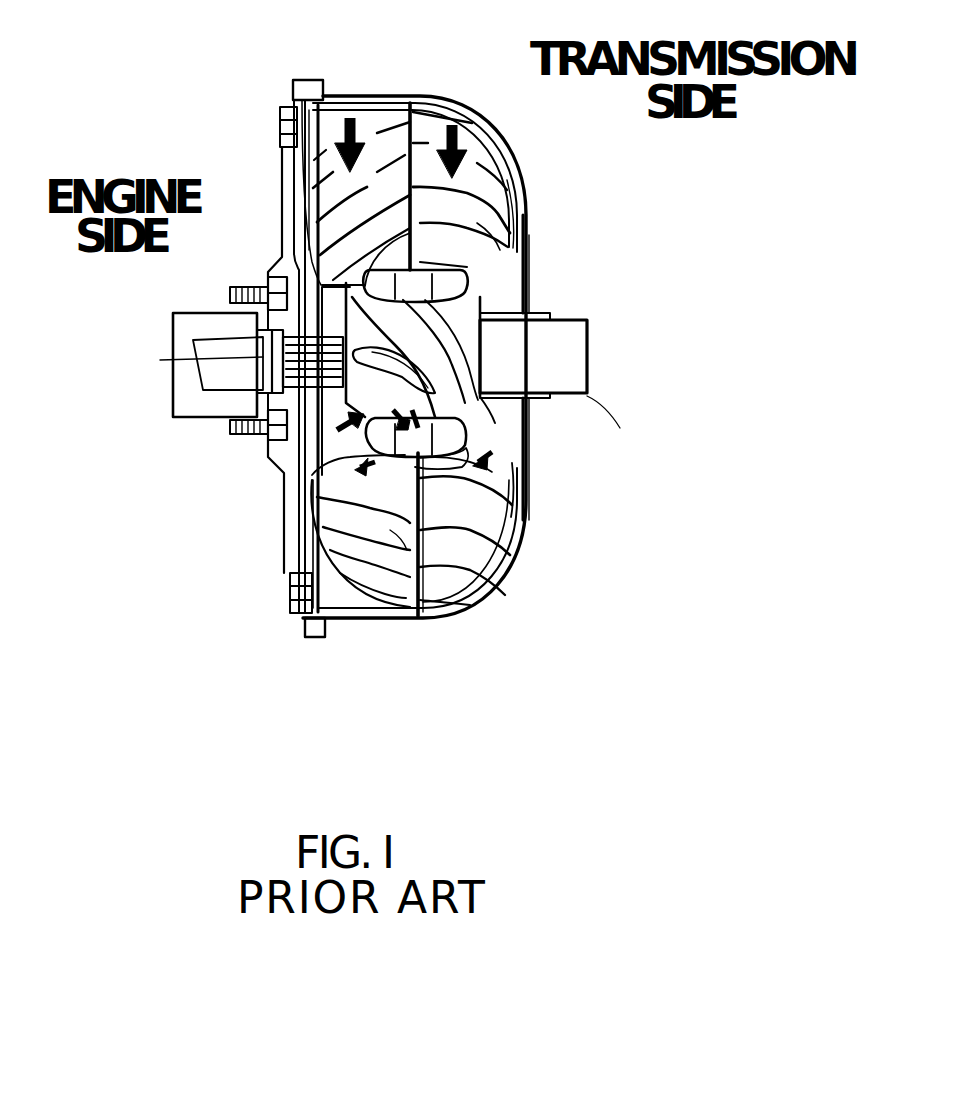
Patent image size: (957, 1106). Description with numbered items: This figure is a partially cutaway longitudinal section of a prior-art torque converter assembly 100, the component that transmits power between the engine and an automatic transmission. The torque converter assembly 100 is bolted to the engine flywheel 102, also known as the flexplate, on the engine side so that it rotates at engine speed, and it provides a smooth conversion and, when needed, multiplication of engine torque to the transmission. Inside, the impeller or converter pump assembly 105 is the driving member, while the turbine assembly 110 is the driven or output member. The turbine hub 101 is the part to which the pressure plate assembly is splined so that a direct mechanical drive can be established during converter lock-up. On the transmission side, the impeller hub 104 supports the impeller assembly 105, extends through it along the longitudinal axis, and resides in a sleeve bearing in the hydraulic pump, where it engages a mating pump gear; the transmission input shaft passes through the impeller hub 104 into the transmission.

The torque converter assembly 100 is at (371, 416).
The turbine hub 101 is at (177, 360).
The engine flywheel 102 is at (281, 511).
The impeller hub 104 is at (553, 400).
The impeller assembly 105 is at (496, 261).
The turbine assembly 110 is at (322, 600).